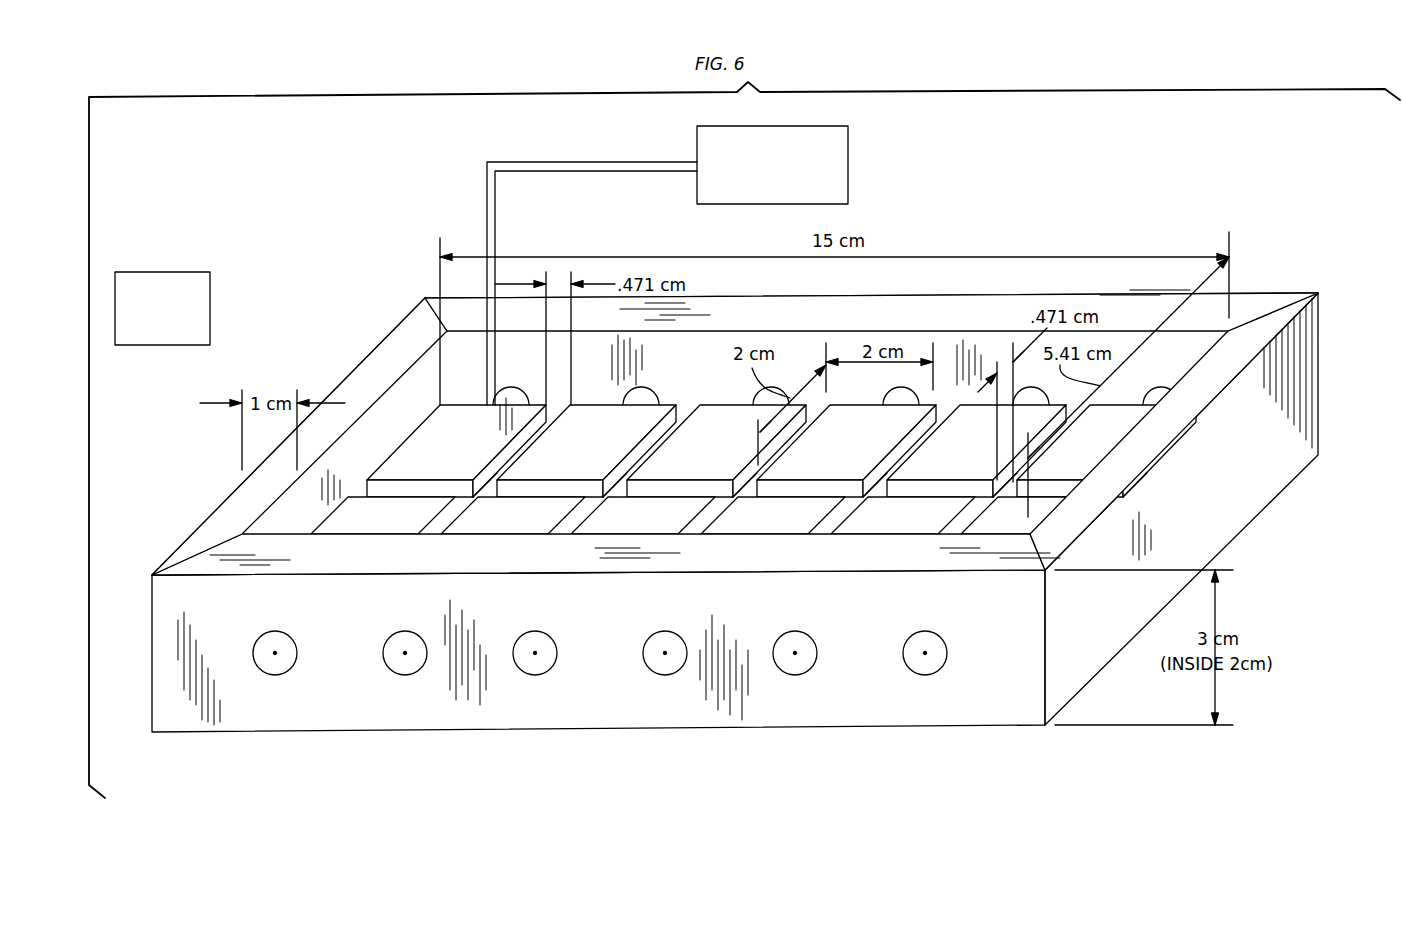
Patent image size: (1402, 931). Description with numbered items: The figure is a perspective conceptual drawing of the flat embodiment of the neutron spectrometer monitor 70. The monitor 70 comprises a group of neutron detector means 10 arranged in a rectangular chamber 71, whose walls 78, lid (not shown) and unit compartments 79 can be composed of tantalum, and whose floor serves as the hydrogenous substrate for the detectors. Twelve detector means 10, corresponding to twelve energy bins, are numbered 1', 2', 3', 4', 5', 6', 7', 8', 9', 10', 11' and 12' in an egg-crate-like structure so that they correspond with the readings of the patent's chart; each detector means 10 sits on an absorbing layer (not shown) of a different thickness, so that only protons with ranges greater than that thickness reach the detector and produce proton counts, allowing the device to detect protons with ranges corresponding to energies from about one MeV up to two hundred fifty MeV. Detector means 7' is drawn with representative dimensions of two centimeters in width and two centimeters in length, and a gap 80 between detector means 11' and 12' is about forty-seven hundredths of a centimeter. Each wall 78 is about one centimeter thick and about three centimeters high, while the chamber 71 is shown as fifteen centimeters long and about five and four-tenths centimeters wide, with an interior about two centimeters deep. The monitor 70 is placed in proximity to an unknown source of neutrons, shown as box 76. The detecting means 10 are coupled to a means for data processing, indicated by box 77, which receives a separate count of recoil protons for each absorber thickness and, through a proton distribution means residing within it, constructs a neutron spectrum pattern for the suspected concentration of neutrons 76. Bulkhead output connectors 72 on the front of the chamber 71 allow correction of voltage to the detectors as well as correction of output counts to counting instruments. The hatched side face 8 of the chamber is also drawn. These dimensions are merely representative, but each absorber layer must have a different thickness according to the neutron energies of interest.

The side wall of housing 8 is at (1290, 419).
The means for detecting neutrons 10 is at (368, 377).
The neutron spectrometer monitor 70 is at (440, 779).
The chamber 71 is at (142, 667).
The bulkhead output connector 72 is at (272, 676).
The unknown source of neutrons 76 is at (174, 322).
The means for data processing 77 is at (853, 158).
The walls 78 is at (585, 700).
The unit compartments 79 is at (882, 519).
The gap 80 is at (1062, 484).
The detector means 1' is at (456, 442).
The detector means 2' is at (383, 515).
The detector means 3' is at (586, 442).
The detector means 4' is at (513, 515).
The detector means 5' is at (716, 442).
The detector means 6' is at (643, 515).
The detector means 7' is at (846, 442).
The detector means 8' is at (773, 515).
The detector means 9' is at (976, 442).
The detector means 10' is at (903, 515).
The detector means 11' is at (1106, 442).
The detector means 12' is at (1033, 515).